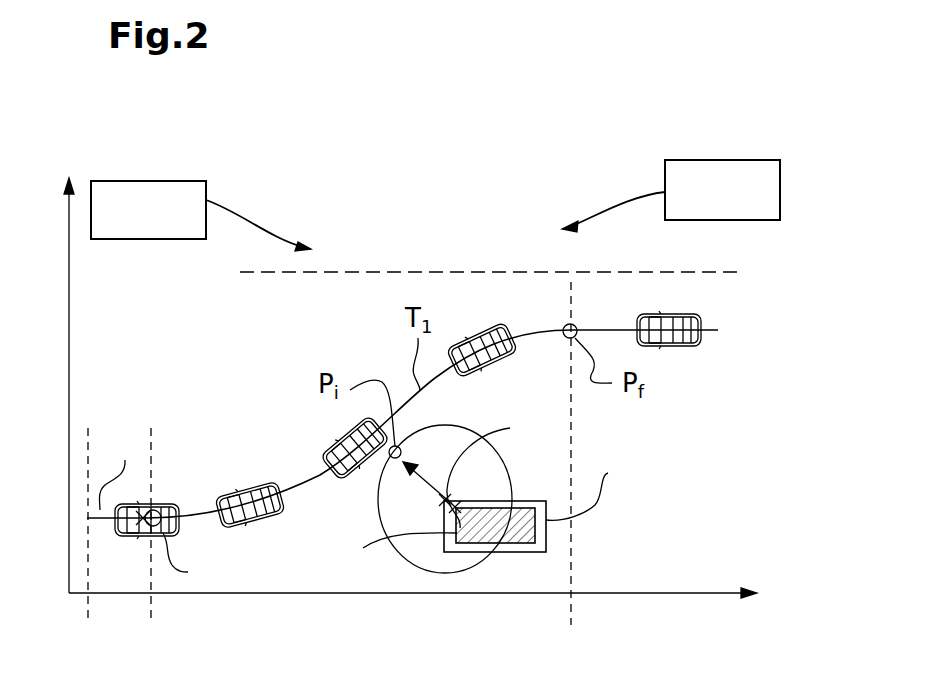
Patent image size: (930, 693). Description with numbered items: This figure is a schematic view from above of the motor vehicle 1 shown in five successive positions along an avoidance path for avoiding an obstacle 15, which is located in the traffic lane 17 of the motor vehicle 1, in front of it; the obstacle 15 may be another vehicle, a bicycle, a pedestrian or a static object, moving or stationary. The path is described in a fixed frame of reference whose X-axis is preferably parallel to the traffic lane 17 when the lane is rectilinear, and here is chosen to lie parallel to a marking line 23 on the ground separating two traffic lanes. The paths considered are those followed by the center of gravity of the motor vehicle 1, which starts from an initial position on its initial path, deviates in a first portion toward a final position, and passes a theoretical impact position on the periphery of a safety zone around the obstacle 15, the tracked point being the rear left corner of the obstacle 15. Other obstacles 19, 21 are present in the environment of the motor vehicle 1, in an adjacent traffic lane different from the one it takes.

The motor vehicle 1 is at (132, 538).
The obstacle 15 is at (522, 533).
The traffic lane 17 is at (666, 568).
The other obstacle 19 is at (201, 216).
The other obstacle 21 is at (671, 196).
The marking line 23 is at (700, 271).